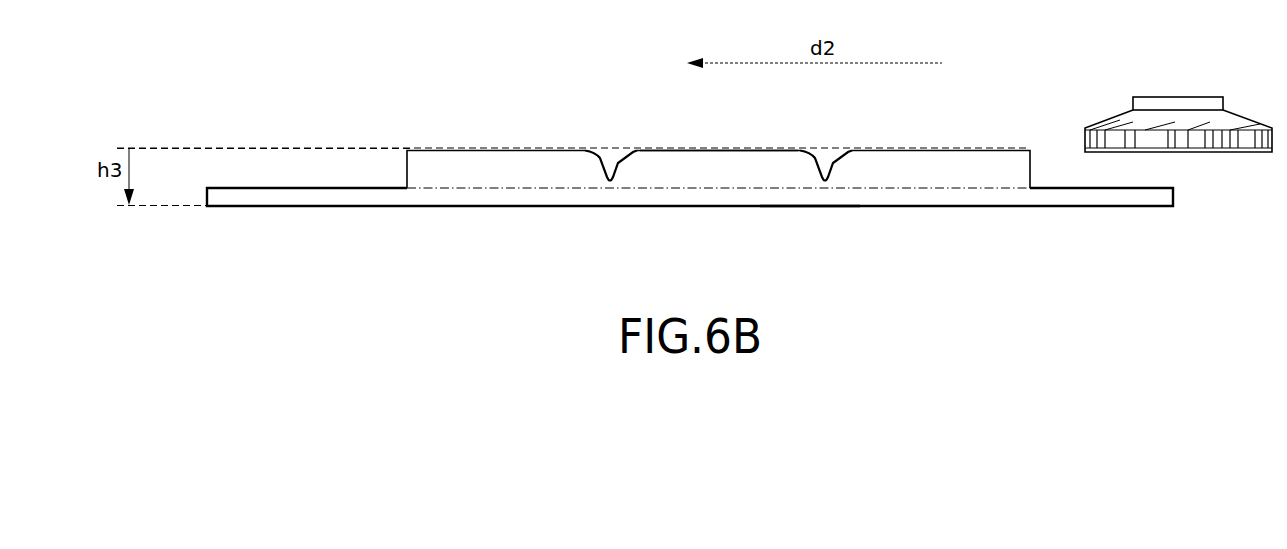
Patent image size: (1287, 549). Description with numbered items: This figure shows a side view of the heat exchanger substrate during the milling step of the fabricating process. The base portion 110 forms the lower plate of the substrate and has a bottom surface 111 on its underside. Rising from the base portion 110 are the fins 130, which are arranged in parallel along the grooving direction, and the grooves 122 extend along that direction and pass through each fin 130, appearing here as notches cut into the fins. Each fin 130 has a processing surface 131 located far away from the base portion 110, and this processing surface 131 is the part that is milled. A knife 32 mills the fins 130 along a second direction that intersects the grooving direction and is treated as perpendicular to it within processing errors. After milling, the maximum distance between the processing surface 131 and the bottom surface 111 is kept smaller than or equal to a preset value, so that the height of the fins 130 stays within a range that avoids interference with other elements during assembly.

The base portion 110 is at (1175, 198).
The bottom surface 111 is at (810, 207).
The fin 130 is at (1008, 176).
The processing surface 131 is at (700, 148).
The groove 122 is at (610, 137).
The knife 32 is at (1235, 112).